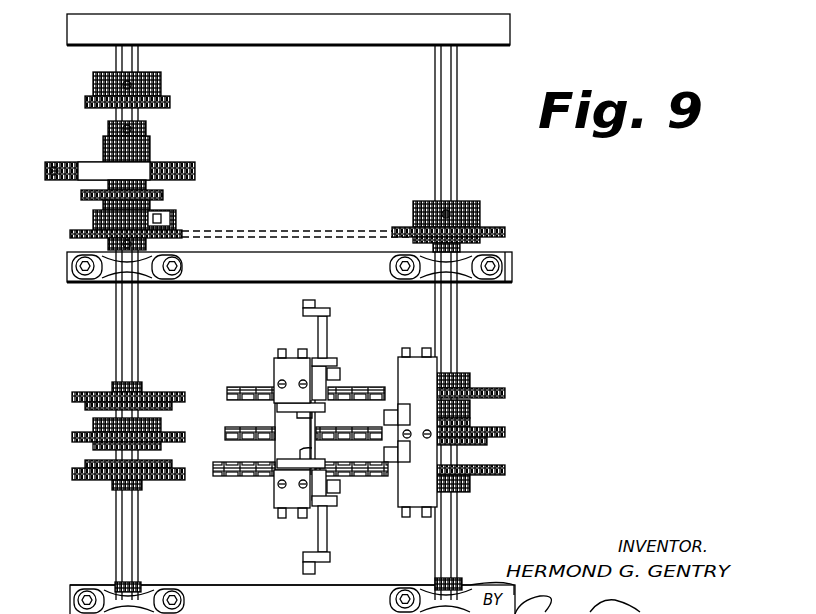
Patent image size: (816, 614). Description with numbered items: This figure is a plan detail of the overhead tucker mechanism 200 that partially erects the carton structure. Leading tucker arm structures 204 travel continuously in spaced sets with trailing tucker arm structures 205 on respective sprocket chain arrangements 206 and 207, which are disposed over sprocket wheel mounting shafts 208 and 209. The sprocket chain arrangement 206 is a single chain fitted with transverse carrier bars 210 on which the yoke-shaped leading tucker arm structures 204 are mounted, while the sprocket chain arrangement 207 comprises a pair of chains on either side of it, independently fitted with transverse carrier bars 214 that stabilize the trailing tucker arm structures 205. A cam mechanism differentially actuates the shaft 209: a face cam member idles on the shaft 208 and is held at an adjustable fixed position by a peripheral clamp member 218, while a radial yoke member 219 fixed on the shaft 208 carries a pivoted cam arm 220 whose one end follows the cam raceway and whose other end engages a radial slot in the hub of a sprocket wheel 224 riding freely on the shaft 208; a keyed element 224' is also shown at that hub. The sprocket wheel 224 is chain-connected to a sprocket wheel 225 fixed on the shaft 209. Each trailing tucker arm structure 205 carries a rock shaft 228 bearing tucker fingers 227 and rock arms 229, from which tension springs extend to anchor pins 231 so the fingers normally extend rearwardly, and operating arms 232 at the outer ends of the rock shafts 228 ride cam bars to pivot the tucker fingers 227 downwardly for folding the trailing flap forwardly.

The overhead tucker mechanism 200 is at (88, 385).
The leading tucker arm structure 204 is at (467, 412).
The trailing tucker arm structure 205 is at (276, 378).
The sprocket chain arrangement 206 is at (76, 437).
The sprocket chain arrangement 207 is at (504, 432).
The sprocket wheel mounting shaft 208 is at (139, 116).
The sprocket wheel mounting shaft 209 is at (458, 152).
The transverse carrier bar 210 is at (425, 372).
The transverse carrier bar 214 is at (273, 448).
The peripheral clamp member 218 is at (50, 166).
The radial yoke member 219 is at (106, 182).
The cam arm 220 is at (83, 196).
The sprocket wheel 224 is at (211, 235).
The key 224' is at (163, 218).
The sprocket wheel 225 is at (504, 230).
The tucker finger 227 is at (322, 411).
The rock shaft 228 is at (328, 336).
The rock arm 229 is at (335, 360).
The anchor pin 231 is at (341, 378).
The operating arm 232 is at (331, 303).